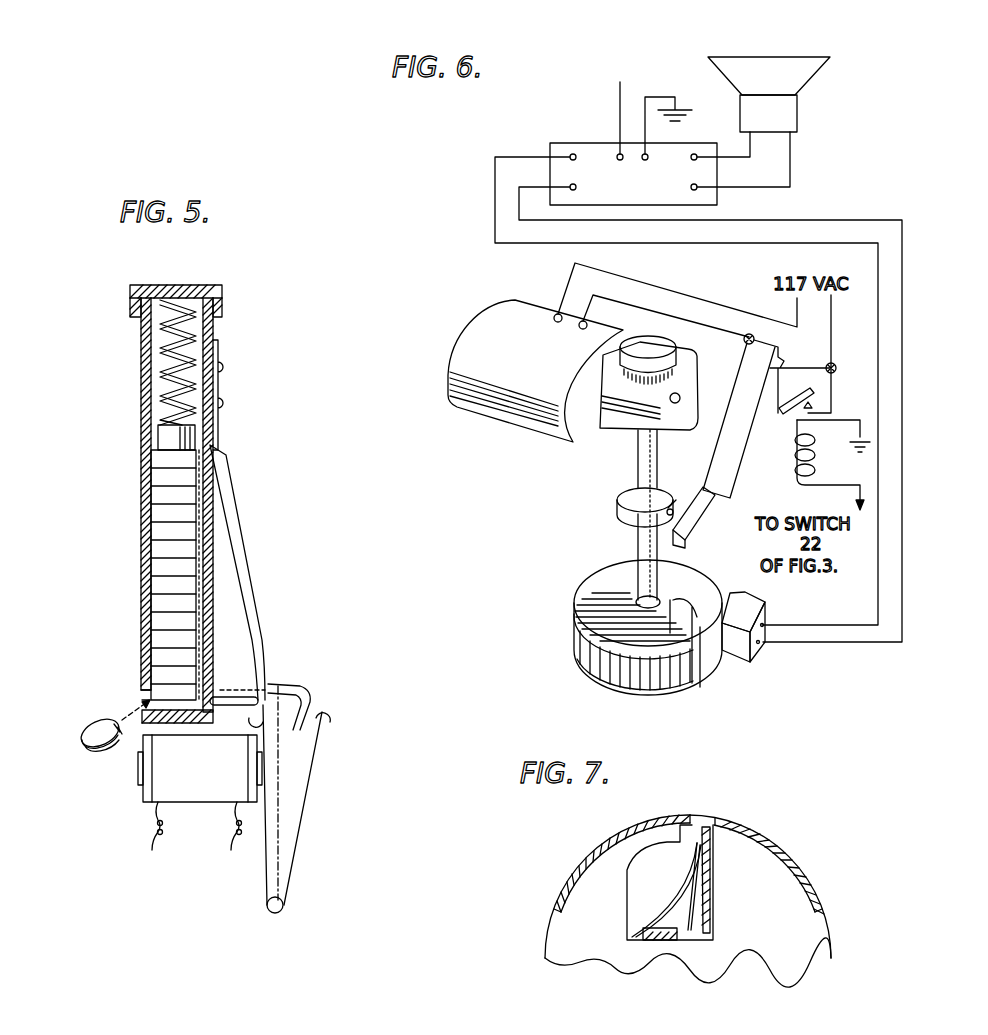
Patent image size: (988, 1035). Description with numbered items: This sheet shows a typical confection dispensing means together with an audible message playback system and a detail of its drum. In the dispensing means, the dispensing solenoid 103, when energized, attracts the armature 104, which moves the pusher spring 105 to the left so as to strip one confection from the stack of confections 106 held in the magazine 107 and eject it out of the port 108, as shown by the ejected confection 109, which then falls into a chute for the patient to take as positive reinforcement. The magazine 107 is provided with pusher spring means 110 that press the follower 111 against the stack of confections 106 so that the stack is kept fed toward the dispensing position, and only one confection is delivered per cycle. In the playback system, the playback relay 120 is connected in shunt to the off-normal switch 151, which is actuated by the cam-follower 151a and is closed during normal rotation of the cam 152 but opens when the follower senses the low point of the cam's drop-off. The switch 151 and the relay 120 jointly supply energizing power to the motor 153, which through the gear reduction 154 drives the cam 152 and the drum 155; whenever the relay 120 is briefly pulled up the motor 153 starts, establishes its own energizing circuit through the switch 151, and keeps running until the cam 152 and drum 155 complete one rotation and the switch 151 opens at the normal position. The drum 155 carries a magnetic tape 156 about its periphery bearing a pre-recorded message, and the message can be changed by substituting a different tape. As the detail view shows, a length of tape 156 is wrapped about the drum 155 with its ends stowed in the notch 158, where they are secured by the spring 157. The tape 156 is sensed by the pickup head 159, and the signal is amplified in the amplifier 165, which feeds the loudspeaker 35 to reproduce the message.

In FIG. 6, the loudspeaker 35 is at (788, 58).
In FIG. 5, the dispensing solenoid 103 is at (198, 768).
In FIG. 5, the armature 104 is at (305, 790).
In FIG. 5, the pusher spring 105 is at (236, 697).
In FIG. 5, the stack of confections 106 is at (172, 582).
In FIG. 5, the magazine 107 is at (142, 532).
In FIG. 5, the port 108 is at (148, 700).
In FIG. 5, the ejected confection 109 is at (90, 730).
In FIG. 5, the pusher spring means 110 is at (160, 352).
In FIG. 5, the follower 111 is at (186, 440).
In FIG. 6, the playback relay 120 is at (842, 411).
In FIG. 6, the off-normal switch 151 is at (710, 525).
In FIG. 6, the cam-follower 151a is at (680, 495).
In FIG. 6, the cam 152 is at (617, 515).
In FIG. 6, the motor 153 is at (535, 412).
In FIG. 6, the gear reduction 154 is at (632, 412).
In FIG. 6, the drum 155 is at (592, 590).
In FIG. 7, the drum 155 is at (780, 885).
In FIG. 6, the magnetic tape 156 is at (578, 648).
In FIG. 7, the magnetic tape 156 is at (732, 815).
In FIG. 7, the spring 157 is at (668, 902).
In FIG. 7, the notch 158 is at (700, 824).
In FIG. 6, the pickup head 159 is at (762, 607).
In FIG. 6, the amplifier 165 is at (590, 143).